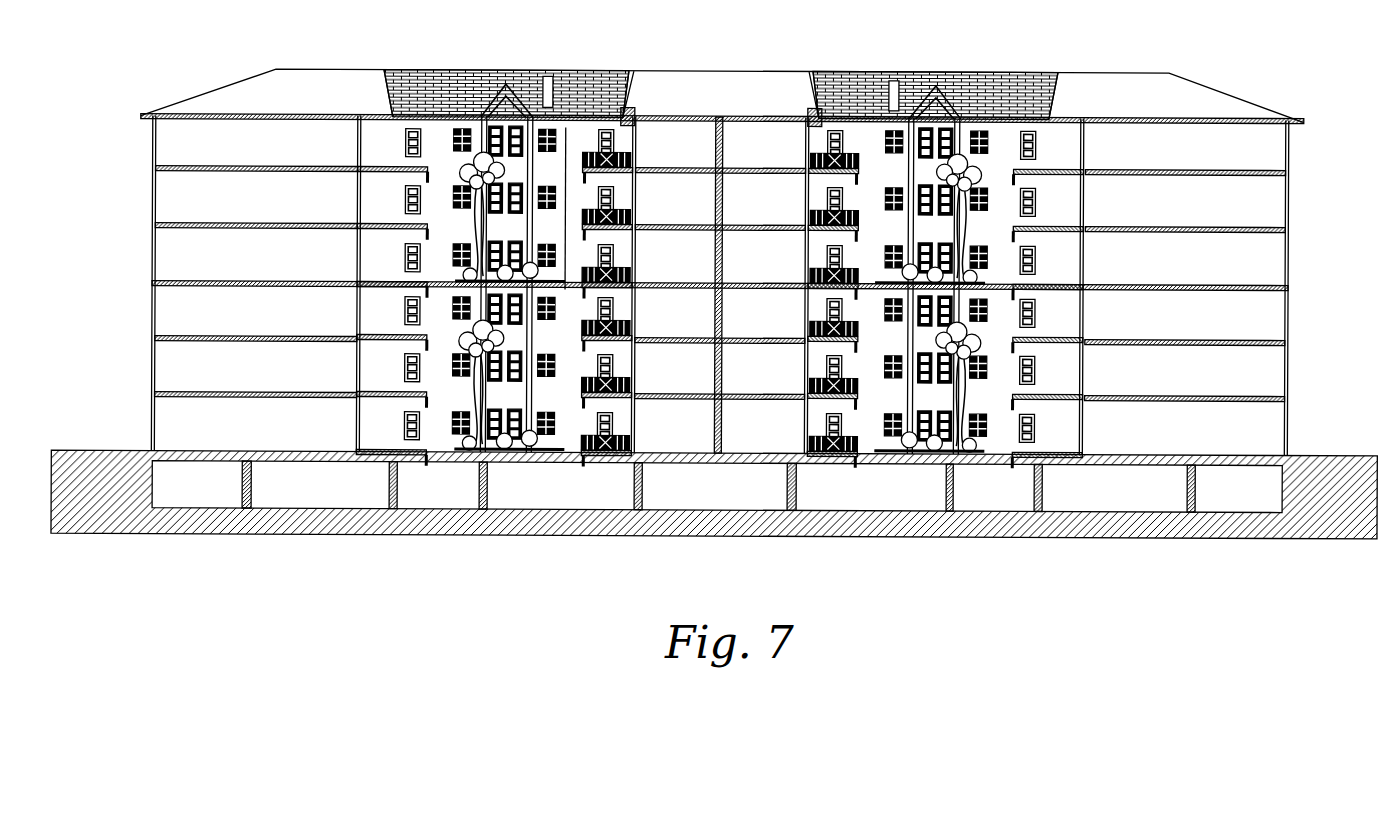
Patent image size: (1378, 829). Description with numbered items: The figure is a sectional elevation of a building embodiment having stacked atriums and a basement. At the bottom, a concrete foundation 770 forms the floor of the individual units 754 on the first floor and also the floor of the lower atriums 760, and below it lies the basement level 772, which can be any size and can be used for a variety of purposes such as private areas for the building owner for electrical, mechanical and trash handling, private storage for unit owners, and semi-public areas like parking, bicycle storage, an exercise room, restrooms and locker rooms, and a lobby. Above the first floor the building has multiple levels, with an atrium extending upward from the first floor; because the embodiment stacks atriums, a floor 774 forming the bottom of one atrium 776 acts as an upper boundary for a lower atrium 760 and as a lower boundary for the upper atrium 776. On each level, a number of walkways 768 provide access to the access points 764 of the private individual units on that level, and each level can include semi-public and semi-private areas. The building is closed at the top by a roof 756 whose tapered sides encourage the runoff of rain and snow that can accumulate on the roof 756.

The individual units 754 is at (680, 130).
The roof 756 is at (1130, 72).
The atrium 760 is at (460, 396).
The access points 764 is at (408, 200).
The walkways 768 is at (1043, 222).
The concrete foundation 770 is at (1113, 455).
The basement level 772 is at (880, 495).
The floor 774 is at (565, 290).
The atrium 776 is at (468, 228).